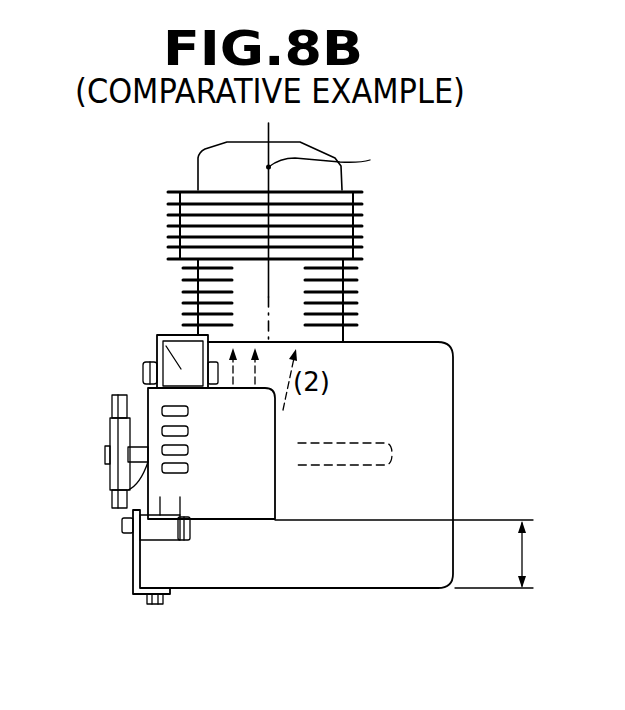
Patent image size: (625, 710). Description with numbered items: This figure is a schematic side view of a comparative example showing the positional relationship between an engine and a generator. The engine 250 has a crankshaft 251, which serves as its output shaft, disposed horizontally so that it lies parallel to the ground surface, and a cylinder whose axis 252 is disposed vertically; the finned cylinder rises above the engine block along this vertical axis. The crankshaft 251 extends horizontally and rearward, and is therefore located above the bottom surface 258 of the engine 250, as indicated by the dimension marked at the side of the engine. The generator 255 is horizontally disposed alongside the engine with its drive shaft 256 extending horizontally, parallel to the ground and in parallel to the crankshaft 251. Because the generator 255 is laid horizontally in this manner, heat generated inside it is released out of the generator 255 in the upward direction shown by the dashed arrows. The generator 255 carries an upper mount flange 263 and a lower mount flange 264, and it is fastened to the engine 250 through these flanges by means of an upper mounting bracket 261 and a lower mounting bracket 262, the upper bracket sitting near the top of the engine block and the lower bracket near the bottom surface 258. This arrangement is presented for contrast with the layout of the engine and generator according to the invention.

The engine 250 is at (438, 380).
The crankshaft 251 is at (363, 443).
The cylinder axis 252 is at (370, 160).
The generator 255 is at (227, 508).
The drive shaft 256 is at (113, 500).
The bottom surface 258 is at (410, 588).
The upper mounting bracket 261 is at (173, 333).
The lower mounting bracket 262 is at (130, 580).
The upper mount flange 263 is at (156, 334).
The lower mount flange 264 is at (172, 533).